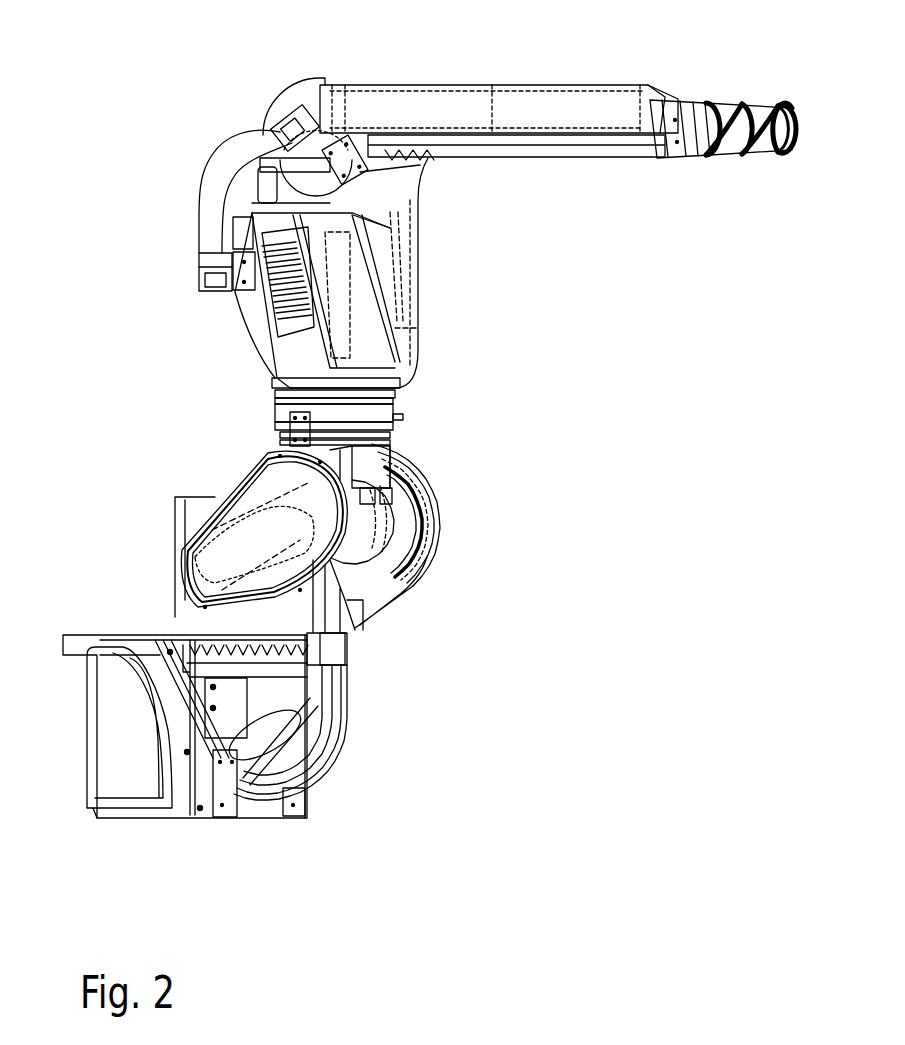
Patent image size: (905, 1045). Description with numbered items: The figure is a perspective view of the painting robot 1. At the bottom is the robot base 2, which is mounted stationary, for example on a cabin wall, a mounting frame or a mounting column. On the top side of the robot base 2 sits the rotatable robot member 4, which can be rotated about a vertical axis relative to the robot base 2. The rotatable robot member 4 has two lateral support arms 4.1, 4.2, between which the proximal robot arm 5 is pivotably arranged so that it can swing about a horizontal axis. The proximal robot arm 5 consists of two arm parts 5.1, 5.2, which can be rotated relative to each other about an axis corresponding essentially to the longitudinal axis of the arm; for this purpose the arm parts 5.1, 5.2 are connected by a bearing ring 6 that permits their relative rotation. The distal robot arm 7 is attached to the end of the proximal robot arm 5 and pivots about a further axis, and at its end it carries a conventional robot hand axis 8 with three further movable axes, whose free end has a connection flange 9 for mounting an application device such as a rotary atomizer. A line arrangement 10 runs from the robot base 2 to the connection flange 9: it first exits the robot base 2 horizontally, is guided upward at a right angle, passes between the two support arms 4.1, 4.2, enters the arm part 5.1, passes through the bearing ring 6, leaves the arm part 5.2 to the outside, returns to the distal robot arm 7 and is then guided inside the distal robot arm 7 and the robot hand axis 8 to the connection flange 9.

The painting robot 1 is at (447, 698).
The robot base 2 is at (122, 793).
The rotatable robot member 4 is at (157, 563).
The lateral support arm 4.1 is at (250, 500).
The lateral support arm 4.2 is at (437, 533).
The proximal robot arm 5 is at (228, 357).
The arm part 5.1 is at (368, 463).
The arm part 5.2 is at (403, 280).
The bearing ring 6 is at (383, 412).
The distal robot arm 7 is at (538, 108).
The robot hand axis 8 is at (727, 150).
The connection flange 9 is at (792, 143).
The line arrangement 10 is at (223, 160).